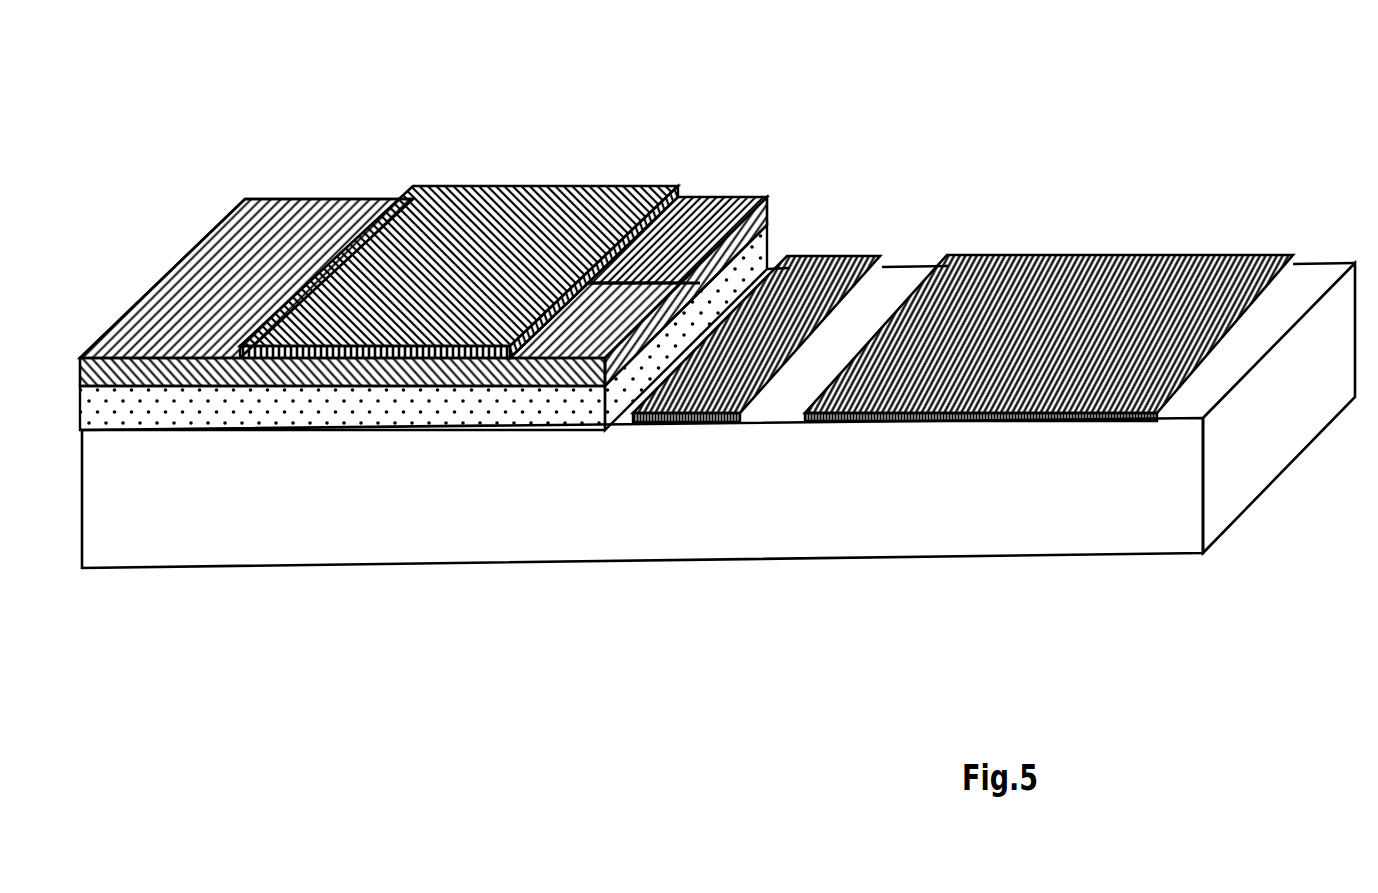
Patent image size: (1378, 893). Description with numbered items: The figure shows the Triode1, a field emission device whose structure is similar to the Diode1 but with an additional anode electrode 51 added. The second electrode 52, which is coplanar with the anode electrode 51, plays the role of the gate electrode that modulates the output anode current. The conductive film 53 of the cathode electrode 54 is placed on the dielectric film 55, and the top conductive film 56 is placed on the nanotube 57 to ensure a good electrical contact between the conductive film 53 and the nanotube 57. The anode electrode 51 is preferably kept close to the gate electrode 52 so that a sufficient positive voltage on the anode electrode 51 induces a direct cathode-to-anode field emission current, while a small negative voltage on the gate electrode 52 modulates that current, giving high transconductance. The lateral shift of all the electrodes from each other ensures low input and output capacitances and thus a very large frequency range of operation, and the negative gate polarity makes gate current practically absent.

The anode electrode 51 is at (1063, 283).
The second electrode 52 is at (827, 255).
The conductive film 53 is at (280, 240).
The cathode electrode 54 is at (502, 127).
The dielectric film 55 is at (243, 410).
The top conductive film 56 is at (553, 210).
The nanotube 57 is at (655, 262).